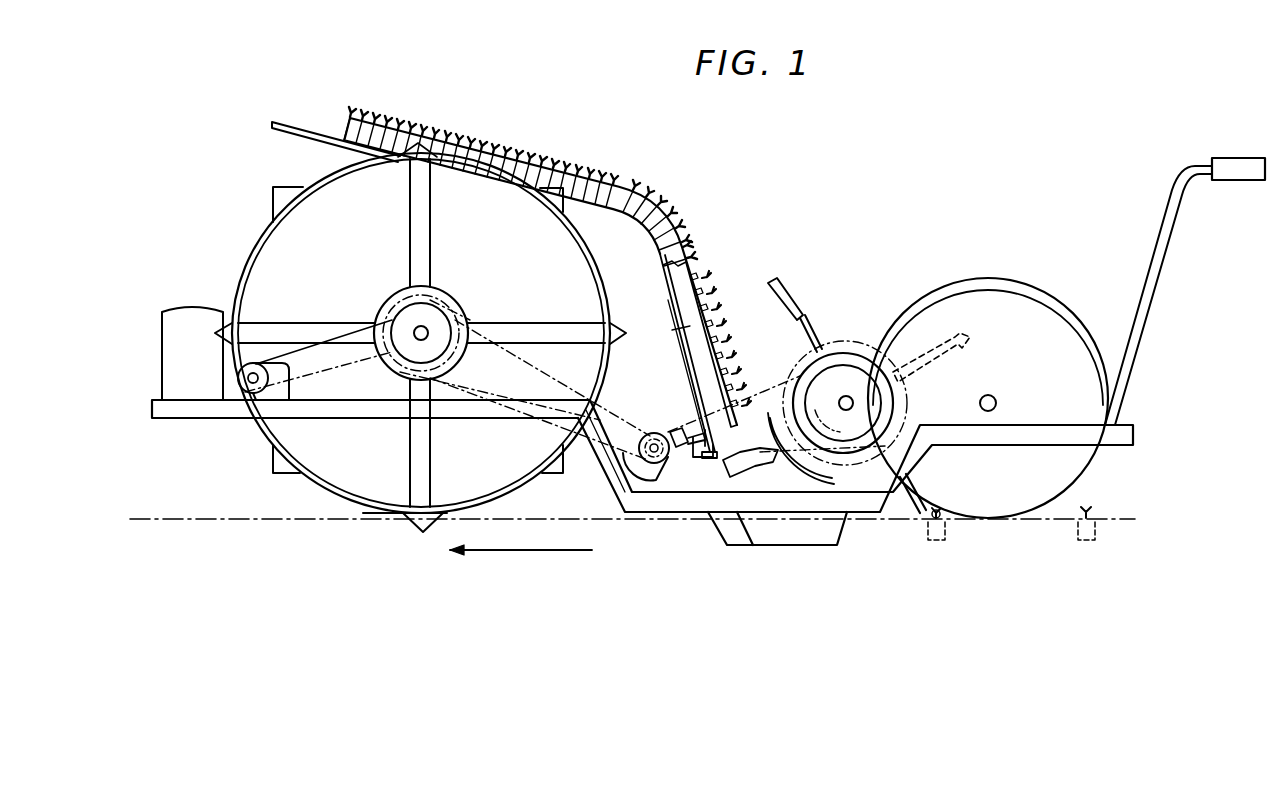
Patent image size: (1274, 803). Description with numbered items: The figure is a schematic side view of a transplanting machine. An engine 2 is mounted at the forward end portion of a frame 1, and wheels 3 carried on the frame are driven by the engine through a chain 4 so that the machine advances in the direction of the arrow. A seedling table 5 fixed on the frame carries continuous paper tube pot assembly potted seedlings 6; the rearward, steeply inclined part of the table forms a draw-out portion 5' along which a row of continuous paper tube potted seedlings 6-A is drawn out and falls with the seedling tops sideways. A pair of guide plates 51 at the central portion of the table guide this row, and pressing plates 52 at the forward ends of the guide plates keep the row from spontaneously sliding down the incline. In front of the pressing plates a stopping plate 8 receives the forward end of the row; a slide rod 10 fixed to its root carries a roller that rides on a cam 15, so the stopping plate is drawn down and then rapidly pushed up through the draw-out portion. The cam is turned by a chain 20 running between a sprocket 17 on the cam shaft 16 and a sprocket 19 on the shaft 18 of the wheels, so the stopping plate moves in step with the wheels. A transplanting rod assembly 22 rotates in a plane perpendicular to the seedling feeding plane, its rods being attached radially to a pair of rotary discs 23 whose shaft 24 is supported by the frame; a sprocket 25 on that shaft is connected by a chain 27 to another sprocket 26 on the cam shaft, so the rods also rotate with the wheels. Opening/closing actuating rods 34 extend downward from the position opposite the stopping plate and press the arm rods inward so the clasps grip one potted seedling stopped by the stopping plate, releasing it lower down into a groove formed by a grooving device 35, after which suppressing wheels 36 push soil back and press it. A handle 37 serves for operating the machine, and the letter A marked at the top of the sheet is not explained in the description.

The section indicator A is at (492, 66).
The frame 1 is at (240, 410).
The engine 2 is at (162, 354).
The wheels 3 is at (366, 516).
The chain 4 is at (329, 330).
The seedling table 5 is at (354, 125).
The draw-out portion 5' is at (662, 339).
The continuous paper tube pot assembly potted seedlings 6 is at (531, 152).
The row of continuous paper tube potted seedlings 6-A is at (710, 294).
The stopping plate 8 is at (722, 438).
The slide rod 10 is at (701, 454).
The cam 15 is at (604, 469).
The cam shaft 16 is at (654, 432).
The sprocket 17 is at (641, 440).
The shaft 18 is at (424, 330).
The sprocket 19 is at (462, 322).
The chain 20 is at (498, 345).
The transplanting rod assembly 22 is at (794, 288).
The rotary discs 23 is at (850, 350).
The shaft 24 is at (840, 396).
The sprocket 25 is at (828, 424).
The sprocket 26 is at (674, 428).
The chain 27 is at (764, 382).
The opening/closing actuating rods 34 is at (785, 452).
The grooving device 35 is at (786, 545).
The suppressing wheels 36 is at (1044, 294).
The handle 37 is at (1243, 184).
The guide plates 51 is at (667, 276).
The pressing plates 52 is at (690, 356).